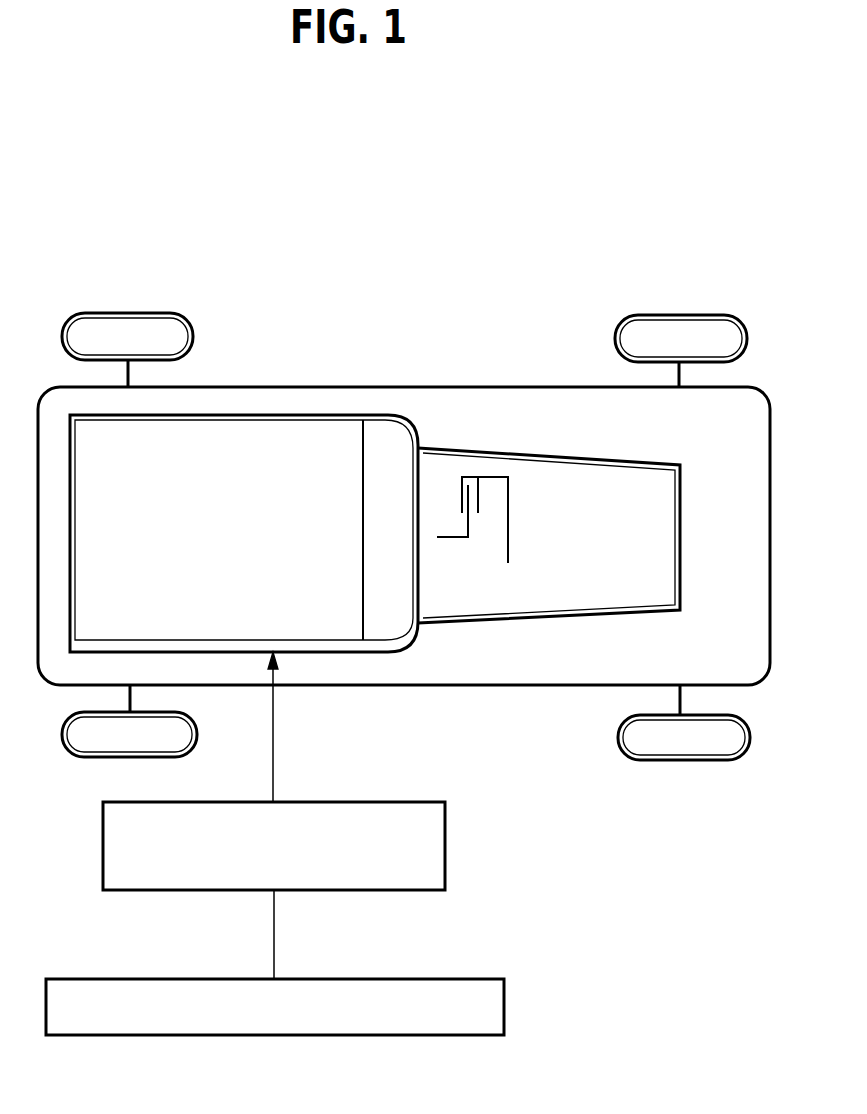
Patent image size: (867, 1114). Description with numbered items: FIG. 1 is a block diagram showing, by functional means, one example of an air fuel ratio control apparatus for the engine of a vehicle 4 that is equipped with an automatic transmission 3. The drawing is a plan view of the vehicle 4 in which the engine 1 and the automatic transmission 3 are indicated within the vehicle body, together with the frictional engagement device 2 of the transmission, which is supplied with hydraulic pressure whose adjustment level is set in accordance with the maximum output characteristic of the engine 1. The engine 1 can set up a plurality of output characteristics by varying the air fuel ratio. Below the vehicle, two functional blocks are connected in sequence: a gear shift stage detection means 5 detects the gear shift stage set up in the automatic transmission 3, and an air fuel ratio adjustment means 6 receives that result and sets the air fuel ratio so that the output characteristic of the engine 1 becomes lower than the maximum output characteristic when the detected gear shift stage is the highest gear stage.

The engine 1 is at (230, 420).
The frictional engagement device 2 is at (472, 478).
The automatic transmission 3 is at (440, 610).
The vehicle 4 is at (560, 688).
The gear shift stage detection means 5 is at (498, 1011).
The air fuel ratio adjustment means 6 is at (433, 841).